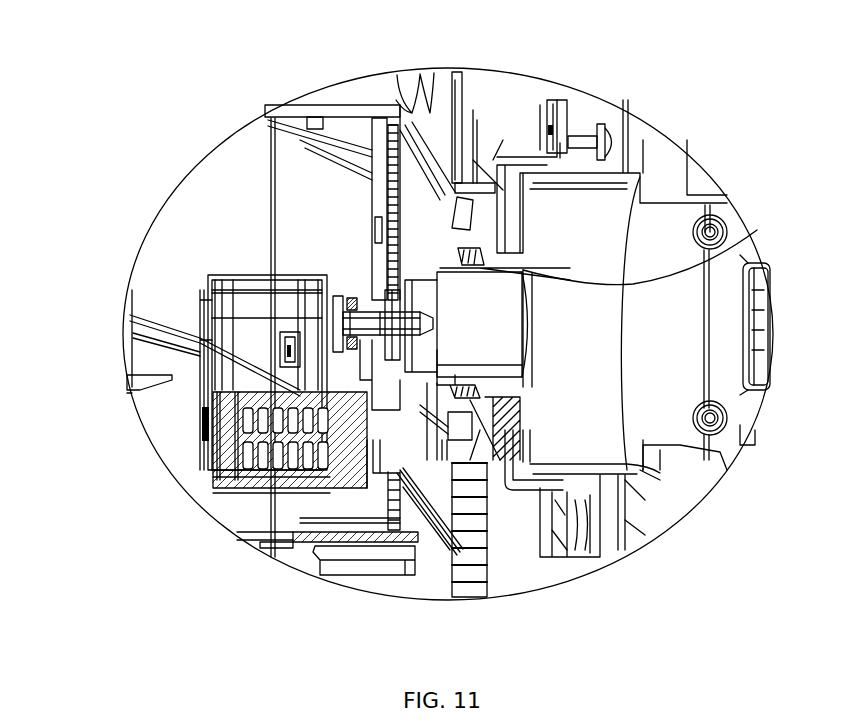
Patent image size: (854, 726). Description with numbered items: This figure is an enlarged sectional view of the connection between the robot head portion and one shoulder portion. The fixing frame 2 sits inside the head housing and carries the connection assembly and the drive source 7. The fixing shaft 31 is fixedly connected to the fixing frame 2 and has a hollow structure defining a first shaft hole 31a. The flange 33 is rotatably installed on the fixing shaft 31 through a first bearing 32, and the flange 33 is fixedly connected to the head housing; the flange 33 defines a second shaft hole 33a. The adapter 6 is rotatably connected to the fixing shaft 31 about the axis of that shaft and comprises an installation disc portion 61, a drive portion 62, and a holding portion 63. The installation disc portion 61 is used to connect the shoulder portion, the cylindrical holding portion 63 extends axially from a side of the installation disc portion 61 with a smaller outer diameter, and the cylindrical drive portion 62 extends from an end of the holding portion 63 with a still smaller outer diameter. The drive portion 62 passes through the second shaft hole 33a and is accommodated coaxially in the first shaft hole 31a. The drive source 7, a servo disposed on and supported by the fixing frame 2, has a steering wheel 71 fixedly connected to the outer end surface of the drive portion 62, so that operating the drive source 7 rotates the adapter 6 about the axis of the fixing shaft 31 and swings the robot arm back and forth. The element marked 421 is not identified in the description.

The fixing frame 2 is at (444, 245).
The first shaft hole 31a is at (377, 167).
The first bearing 32 is at (452, 207).
The connecting block 421 is at (480, 190).
The flange 33 is at (562, 132).
The installation disc portion 61 is at (632, 143).
The adapter 6 is at (655, 168).
The holding portion 63 is at (565, 185).
The drive portion 62 is at (650, 280).
The steering wheel 71 is at (330, 297).
The drive source 7 is at (235, 420).
The fixing shaft 31 is at (427, 440).
The second shaft hole 33a is at (490, 418).